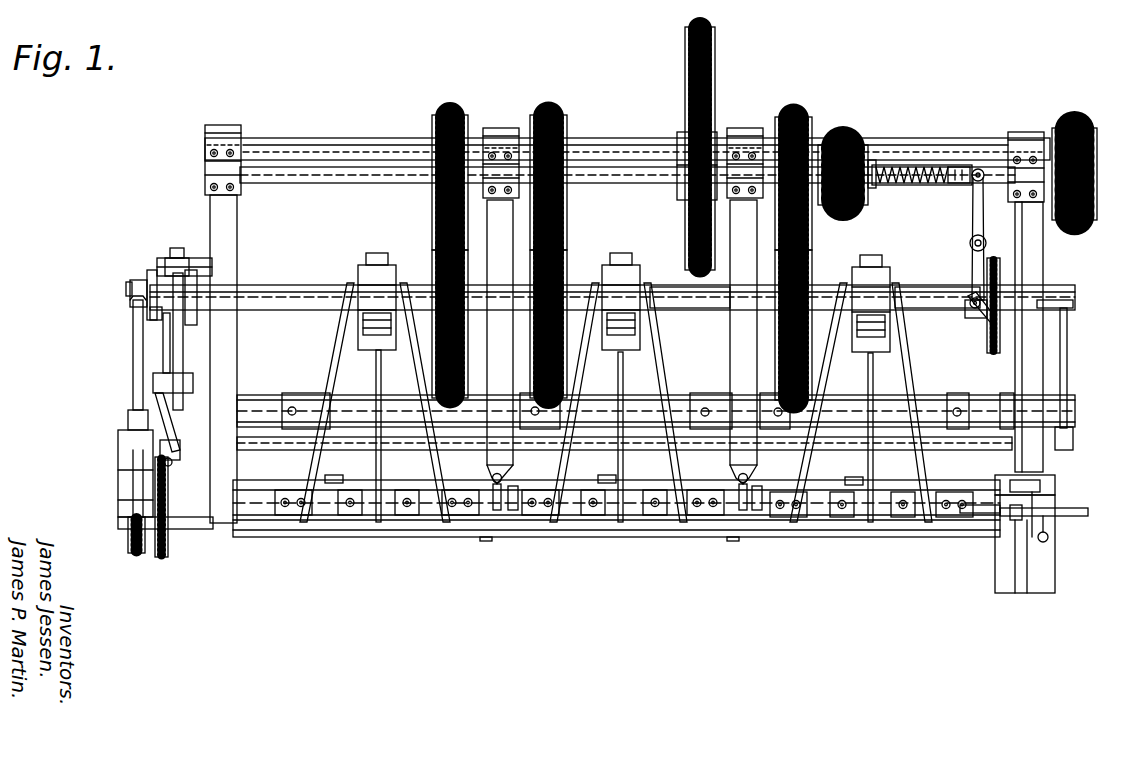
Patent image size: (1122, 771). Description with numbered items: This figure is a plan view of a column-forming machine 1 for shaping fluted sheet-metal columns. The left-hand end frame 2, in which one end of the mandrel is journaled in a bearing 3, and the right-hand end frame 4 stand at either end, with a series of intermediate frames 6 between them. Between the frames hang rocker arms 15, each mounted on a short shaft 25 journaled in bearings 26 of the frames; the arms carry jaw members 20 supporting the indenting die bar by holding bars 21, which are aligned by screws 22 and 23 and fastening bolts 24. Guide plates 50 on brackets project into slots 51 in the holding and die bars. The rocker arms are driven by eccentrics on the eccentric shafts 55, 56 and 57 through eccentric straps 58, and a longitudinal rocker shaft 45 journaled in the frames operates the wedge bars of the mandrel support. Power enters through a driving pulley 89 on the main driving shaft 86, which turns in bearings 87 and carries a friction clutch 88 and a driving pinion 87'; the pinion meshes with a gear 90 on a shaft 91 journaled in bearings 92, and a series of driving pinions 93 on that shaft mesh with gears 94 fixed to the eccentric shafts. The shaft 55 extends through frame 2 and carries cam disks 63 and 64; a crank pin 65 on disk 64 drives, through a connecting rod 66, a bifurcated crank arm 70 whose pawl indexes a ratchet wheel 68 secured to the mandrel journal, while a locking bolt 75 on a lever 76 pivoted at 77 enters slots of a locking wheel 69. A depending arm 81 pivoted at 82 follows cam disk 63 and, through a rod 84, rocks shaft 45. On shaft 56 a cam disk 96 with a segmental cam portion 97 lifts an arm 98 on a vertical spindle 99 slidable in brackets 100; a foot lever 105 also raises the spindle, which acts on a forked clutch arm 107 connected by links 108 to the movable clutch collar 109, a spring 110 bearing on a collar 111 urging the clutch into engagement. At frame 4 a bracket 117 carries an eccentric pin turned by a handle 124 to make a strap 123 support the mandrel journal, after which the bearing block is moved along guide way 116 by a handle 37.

The frame 1 is at (1056, 482).
The left-hand end frame 2 is at (235, 234).
The bearing 3 is at (363, 135).
The right-hand end frame 4 is at (927, 470).
The intermediate frames 6 is at (622, 342).
The rocker arms 15 is at (340, 358).
The jaw members 20 is at (330, 500).
The holding bars 21 is at (512, 508).
The screws 22 is at (410, 516).
The screws 23 is at (300, 516).
The fastening bolts 24 is at (337, 537).
The short shaft 25 is at (260, 406).
The bearings 26 is at (258, 392).
The handle 37 is at (1078, 516).
The longitudinal rocker shaft 45 is at (300, 441).
The guide plates 50 is at (503, 476).
The slots 51 is at (485, 522).
The eccentric shaft 55 is at (290, 284).
The eccentric shaft 56 is at (902, 290).
The eccentric shaft 57 is at (646, 290).
The eccentric straps 58 is at (376, 266).
The cam disk 63 is at (163, 318).
The cam disk 64 is at (147, 276).
The crank pin 65 is at (128, 288).
The connecting rod 66 is at (133, 349).
The ratchet wheel 68 is at (128, 541).
The locking wheel 69 is at (161, 559).
The bifurcated crank arm 70 is at (120, 460).
The locking bolt 75 is at (176, 466).
The lever 76 is at (163, 353).
The pivot 77 is at (153, 388).
The depending arm 81 is at (176, 260).
The pivot 82 is at (178, 262).
The rod 84 is at (181, 345).
The main driving shaft 86 is at (342, 180).
The bearings 87 is at (602, 160).
The driving pinion 87' is at (679, 178).
The friction clutch 88 is at (836, 150).
The driving pulley 89 is at (1068, 133).
The gear 90 is at (712, 90).
The shaft 91 is at (624, 143).
The bearings 92 is at (218, 128).
The driving pinions 93 is at (446, 120).
The gears 94 is at (432, 222).
The cam disk 96 is at (985, 344).
The segmental cam portion 97 is at (975, 298).
The arm 98 is at (972, 306).
The vertical spindle 99 is at (969, 243).
The brackets 100 is at (990, 242).
The foot lever 105 is at (1066, 358).
The forked clutch arm 107 is at (974, 218).
The links 108 is at (914, 188).
The movable clutch collar 109 is at (872, 160).
The spring 110 is at (938, 188).
The collar 111 is at (957, 160).
The guide way 116 is at (1050, 567).
The bracket 117 is at (1040, 492).
The strap 123 is at (1000, 512).
The handle 124 is at (1016, 522).